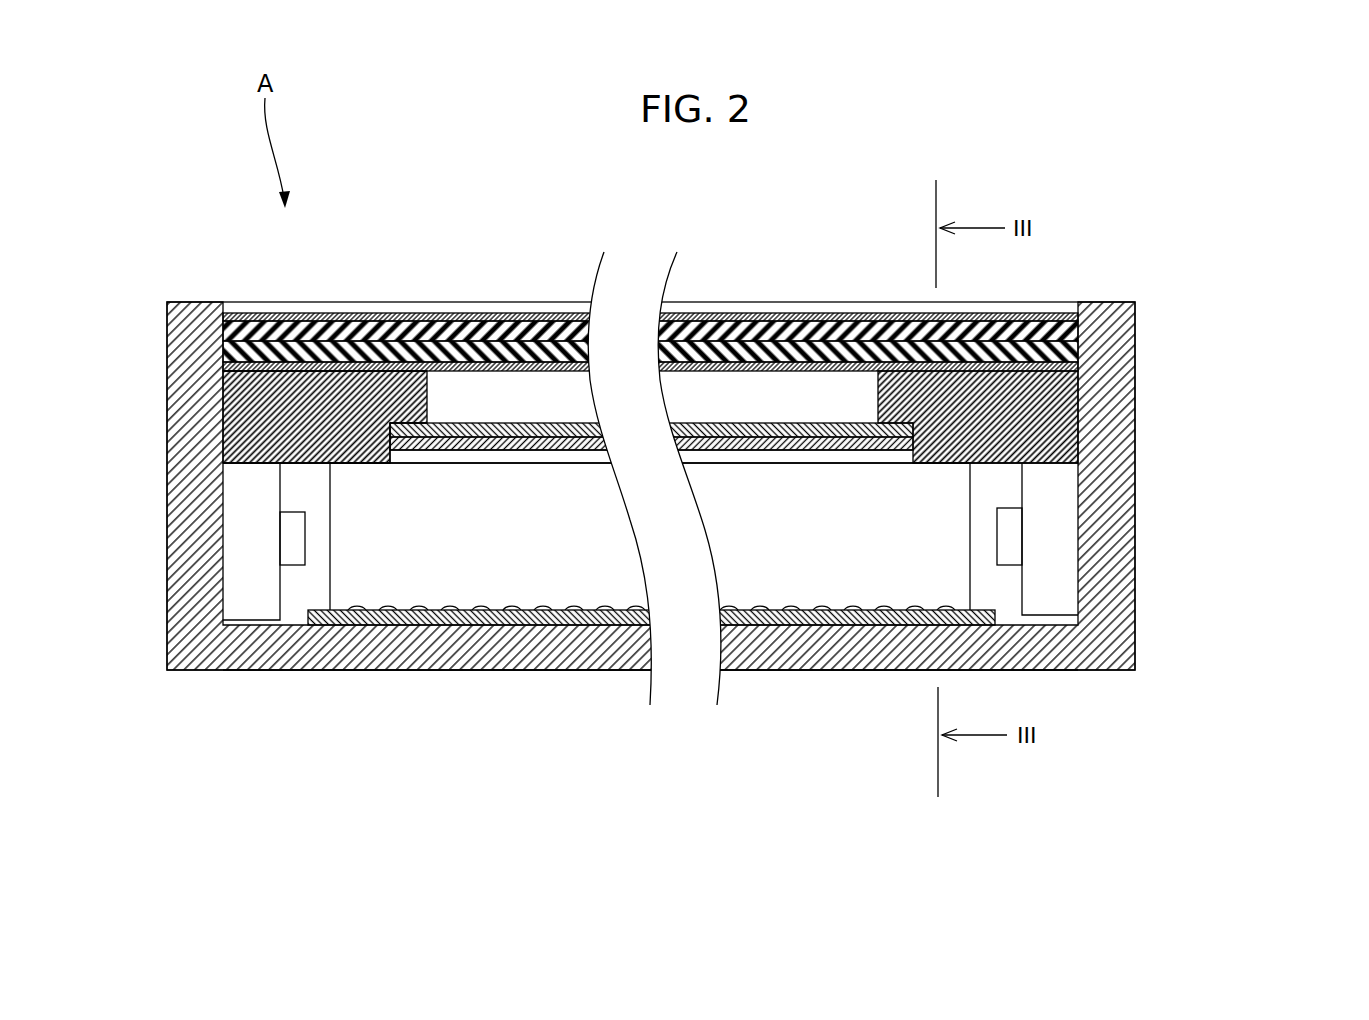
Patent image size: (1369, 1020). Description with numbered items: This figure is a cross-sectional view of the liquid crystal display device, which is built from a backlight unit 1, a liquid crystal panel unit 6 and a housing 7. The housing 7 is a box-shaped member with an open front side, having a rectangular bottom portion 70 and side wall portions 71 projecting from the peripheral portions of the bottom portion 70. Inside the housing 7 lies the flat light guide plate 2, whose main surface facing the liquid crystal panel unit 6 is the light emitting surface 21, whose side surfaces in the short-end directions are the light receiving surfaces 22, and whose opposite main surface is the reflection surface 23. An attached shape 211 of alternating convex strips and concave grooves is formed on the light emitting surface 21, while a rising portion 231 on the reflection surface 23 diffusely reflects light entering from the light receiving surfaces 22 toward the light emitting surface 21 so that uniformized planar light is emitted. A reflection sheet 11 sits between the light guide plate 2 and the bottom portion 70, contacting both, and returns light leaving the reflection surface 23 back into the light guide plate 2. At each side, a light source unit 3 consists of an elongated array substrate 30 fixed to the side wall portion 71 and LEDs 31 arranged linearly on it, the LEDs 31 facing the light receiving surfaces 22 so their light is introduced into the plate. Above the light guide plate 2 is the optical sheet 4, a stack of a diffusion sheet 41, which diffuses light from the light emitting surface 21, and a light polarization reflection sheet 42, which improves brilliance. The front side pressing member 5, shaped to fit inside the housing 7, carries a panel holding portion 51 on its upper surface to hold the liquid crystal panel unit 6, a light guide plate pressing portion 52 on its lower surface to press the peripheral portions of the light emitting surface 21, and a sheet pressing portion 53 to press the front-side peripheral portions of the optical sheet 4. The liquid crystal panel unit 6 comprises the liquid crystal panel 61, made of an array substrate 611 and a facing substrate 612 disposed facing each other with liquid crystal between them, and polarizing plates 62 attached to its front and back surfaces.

The backlight unit 1 is at (1222, 503).
The light guide plate 2 is at (878, 563).
The light emitting surface 21 is at (553, 443).
The attached shape 211 is at (793, 455).
The light receiving surface 22 is at (328, 582).
The reflection surface 23 is at (608, 611).
The rising portion 231 is at (757, 605).
The light source unit 3 is at (633, 541).
The array substrate 30 is at (238, 516).
The LED 31 is at (298, 549).
The optical sheet 4 is at (820, 435).
The diffusion sheet 41 is at (1135, 442).
The light polarization reflection sheet 42 is at (1135, 412).
The front side pressing member 5 is at (240, 410).
The panel holding portion 51 is at (225, 383).
The light guide plate pressing portion 52 is at (257, 455).
The sheet pressing portion 53 is at (250, 446).
The liquid crystal panel unit 6 is at (786, 330).
The liquid crystal panel 61 is at (765, 331).
The array substrate 611 is at (1135, 350).
The facing substrate 612 is at (1135, 324).
The polarizing plate 62 is at (1135, 312).
The housing 7 is at (222, 660).
The bottom portion 70 is at (387, 673).
The side wall portion 71 is at (183, 593).
The reflection sheet 11 is at (500, 645).